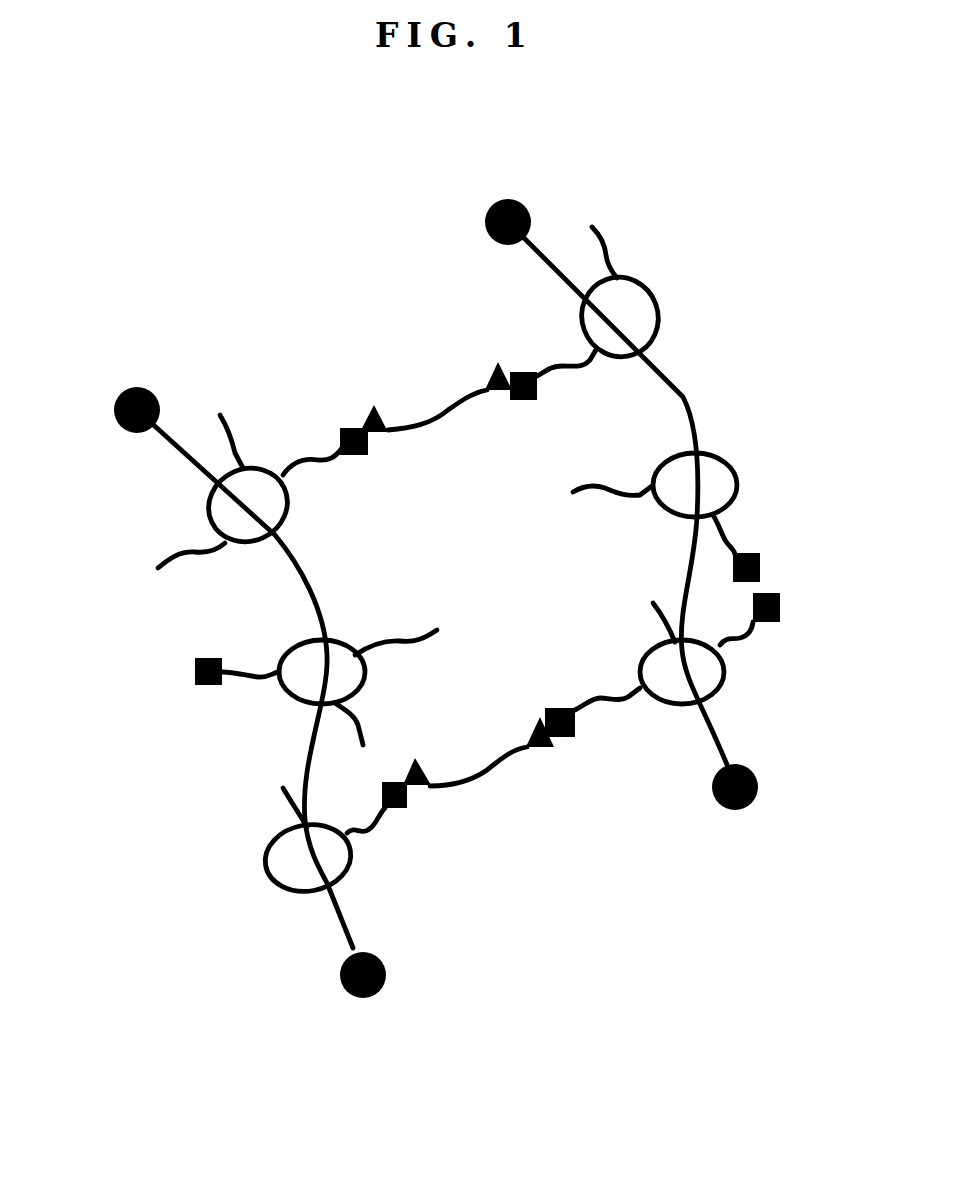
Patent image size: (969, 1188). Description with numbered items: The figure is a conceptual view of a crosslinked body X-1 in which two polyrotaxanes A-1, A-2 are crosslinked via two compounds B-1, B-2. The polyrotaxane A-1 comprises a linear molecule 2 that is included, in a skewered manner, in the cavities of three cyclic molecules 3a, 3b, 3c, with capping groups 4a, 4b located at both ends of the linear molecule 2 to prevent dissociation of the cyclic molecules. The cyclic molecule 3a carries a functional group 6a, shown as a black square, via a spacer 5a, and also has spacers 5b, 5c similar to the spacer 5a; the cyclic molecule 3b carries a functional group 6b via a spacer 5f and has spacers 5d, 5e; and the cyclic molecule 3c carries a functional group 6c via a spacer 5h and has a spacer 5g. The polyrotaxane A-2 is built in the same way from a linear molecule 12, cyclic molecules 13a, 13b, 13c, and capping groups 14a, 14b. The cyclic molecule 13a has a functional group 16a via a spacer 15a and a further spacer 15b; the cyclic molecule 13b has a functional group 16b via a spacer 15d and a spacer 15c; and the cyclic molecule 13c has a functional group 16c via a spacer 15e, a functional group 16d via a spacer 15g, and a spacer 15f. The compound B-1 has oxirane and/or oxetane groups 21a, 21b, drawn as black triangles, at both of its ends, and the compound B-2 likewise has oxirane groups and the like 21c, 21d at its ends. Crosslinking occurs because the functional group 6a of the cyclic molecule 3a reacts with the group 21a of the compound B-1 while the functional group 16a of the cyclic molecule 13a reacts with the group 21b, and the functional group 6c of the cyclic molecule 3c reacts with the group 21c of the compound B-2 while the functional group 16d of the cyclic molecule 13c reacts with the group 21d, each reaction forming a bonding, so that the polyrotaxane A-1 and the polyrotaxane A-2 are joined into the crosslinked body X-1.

The linear molecule 2 is at (192, 462).
The cyclic molecule 3a is at (287, 516).
The cyclic molecule 3b is at (292, 648).
The cyclic molecule 3c is at (268, 878).
The capping group 4a is at (117, 405).
The capping group 4b is at (342, 985).
The spacer 5a is at (308, 458).
The spacer 5b is at (238, 415).
The spacer 5c is at (191, 571).
The spacer 5d is at (384, 645).
The spacer 5e is at (356, 724).
The spacer 5f is at (252, 688).
The spacer 5g is at (285, 795).
The spacer 5h is at (352, 835).
The functional group 6a is at (350, 455).
The functional group 6b is at (195, 665).
The functional group 6c is at (400, 808).
The linear molecule 12 is at (690, 398).
The cyclic molecule 13a is at (658, 315).
The cyclic molecule 13b is at (720, 456).
The cyclic molecule 13c is at (722, 685).
The capping group 14a is at (485, 220).
The capping group 14b is at (758, 790).
The spacer 15a is at (565, 365).
The spacer 15b is at (605, 248).
The spacer 15c is at (615, 495).
The spacer 15d is at (735, 535).
The spacer 15e is at (745, 642).
The spacer 15f is at (655, 610).
The spacer 15g is at (610, 700).
The functional group 16a is at (537, 395).
The functional group 16b is at (760, 568).
The functional group 16c is at (780, 610).
The functional group 16d is at (565, 737).
The oxirane and/or oxetane group 21a is at (375, 435).
The oxirane and/or oxetane group 21b is at (510, 392).
The oxirane and/or oxetane group 21c is at (420, 790).
The oxirane and/or oxetane group 21d is at (540, 750).
The polyrotaxane A-1 is at (283, 323).
The polyrotaxane A-2 is at (702, 180).
The compound B-1 is at (498, 362).
The compound B-2 is at (543, 718).
The crosslinked body X-1 is at (745, 232).